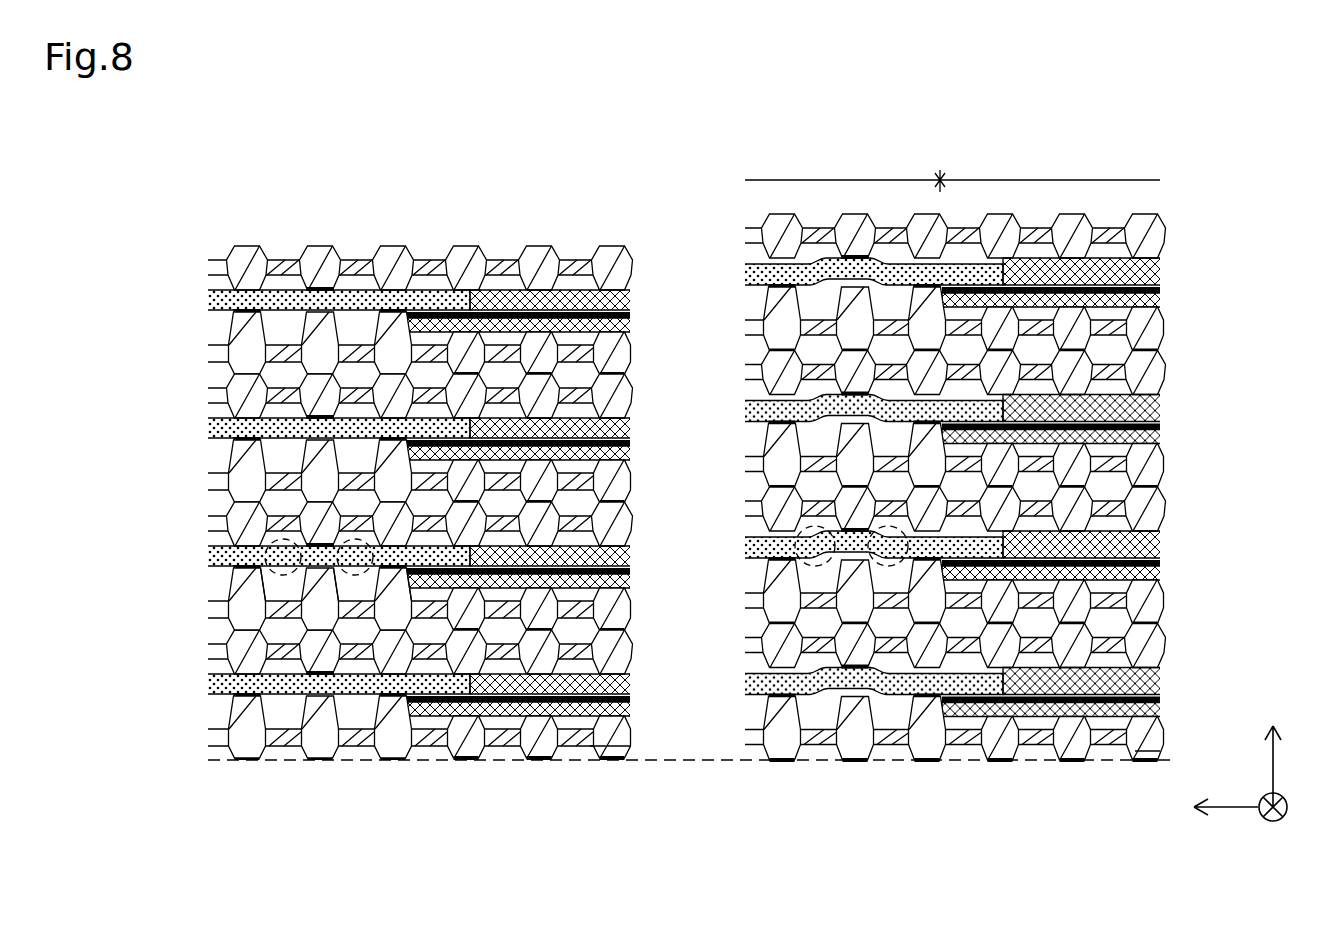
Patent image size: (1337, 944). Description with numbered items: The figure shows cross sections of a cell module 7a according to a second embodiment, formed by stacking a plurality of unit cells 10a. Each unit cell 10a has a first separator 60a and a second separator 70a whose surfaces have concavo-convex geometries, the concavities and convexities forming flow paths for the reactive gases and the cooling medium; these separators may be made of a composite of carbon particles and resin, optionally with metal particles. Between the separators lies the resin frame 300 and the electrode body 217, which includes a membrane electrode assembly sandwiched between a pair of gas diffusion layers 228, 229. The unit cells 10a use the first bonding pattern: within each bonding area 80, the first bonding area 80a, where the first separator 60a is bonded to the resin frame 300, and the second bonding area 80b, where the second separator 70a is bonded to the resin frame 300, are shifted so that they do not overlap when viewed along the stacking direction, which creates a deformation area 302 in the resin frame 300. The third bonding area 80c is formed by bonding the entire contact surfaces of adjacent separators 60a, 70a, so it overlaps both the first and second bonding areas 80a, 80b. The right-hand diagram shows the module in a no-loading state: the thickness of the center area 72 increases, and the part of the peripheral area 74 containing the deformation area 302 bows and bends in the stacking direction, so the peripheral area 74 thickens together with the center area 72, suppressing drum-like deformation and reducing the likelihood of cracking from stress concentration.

The cell module 7a is at (155, 133).
The peripheral area 74 is at (845, 172).
The center area 72 is at (1050, 166).
The unit cell 10a is at (203, 252).
The deformation area 302 is at (275, 540).
The first separator 60a is at (210, 527).
The resin frame 300 is at (210, 567).
The second separator 70a is at (210, 604).
The electrode body 217 is at (634, 567).
The bonding area 80 is at (340, 721).
The first bonding area 80a is at (306, 575).
The second bonding area 80b is at (231, 580).
The third bonding area 80c is at (391, 574).
The gas diffusion layer 229 is at (562, 740).
The gas diffusion layer 228 is at (603, 743).